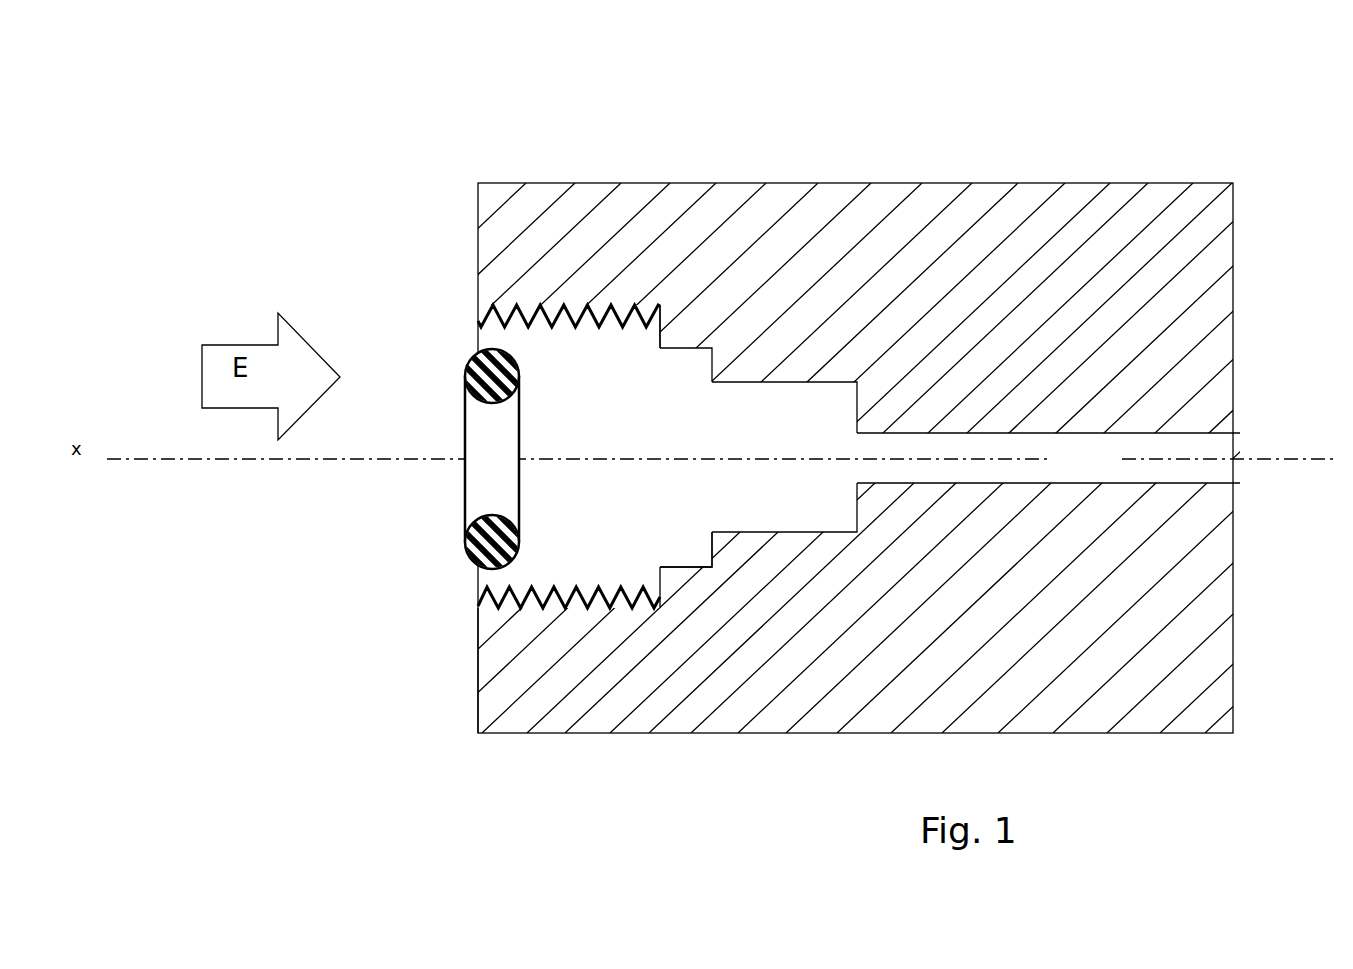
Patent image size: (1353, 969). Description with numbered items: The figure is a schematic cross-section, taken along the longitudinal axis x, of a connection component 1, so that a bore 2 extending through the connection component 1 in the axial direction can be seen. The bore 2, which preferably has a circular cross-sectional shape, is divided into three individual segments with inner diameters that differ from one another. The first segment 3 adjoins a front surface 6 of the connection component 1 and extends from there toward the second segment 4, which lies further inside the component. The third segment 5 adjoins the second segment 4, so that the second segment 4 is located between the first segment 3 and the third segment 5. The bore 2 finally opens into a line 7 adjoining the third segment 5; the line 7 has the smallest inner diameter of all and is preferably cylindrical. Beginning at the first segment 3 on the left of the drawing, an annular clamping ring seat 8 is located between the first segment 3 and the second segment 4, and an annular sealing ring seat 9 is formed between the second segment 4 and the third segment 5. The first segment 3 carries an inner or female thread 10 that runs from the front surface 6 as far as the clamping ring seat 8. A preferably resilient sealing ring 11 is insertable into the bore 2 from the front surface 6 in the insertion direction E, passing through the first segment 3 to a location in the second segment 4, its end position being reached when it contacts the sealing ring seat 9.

The connection component 1 is at (853, 183).
The bore 2 is at (516, 338).
The first segment 3 is at (594, 430).
The second segment 4 is at (687, 430).
The third segment 5 is at (787, 430).
The front surface 6 is at (430, 677).
The line 7 is at (1092, 458).
The clamping ring seat 8 is at (641, 338).
The sealing ring seat 9 is at (687, 537).
The female thread 10 is at (556, 574).
The sealing ring 11 is at (467, 550).